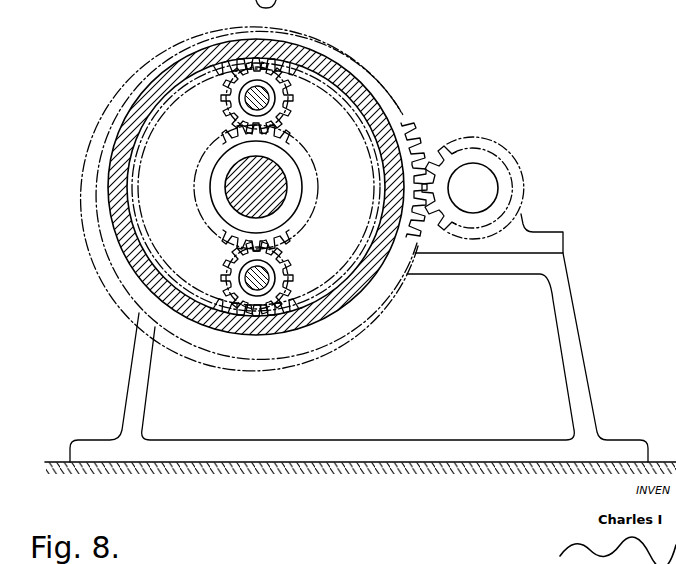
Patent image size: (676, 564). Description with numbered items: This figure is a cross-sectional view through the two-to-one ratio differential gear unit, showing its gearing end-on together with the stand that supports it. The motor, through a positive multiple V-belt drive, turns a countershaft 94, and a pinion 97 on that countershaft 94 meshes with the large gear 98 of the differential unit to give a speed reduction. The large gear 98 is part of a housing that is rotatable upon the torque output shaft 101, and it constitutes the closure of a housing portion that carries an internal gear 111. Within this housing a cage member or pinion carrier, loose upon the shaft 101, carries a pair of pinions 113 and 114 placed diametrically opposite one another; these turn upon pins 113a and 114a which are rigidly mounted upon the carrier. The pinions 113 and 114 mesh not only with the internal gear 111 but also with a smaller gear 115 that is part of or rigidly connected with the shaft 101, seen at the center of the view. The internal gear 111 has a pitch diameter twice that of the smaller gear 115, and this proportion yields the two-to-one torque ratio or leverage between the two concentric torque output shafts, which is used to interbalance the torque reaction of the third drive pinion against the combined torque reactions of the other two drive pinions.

The countershaft 94 is at (490, 184).
The pinion 97 is at (442, 142).
The gear 98 is at (414, 121).
The torque output shaft 101 is at (278, 189).
The internal gear 111 is at (284, 116).
The pinion 113 is at (282, 265).
The pin 113a is at (243, 278).
The pinion 114 is at (287, 119).
The pin 114a is at (247, 99).
The smaller gear 115 is at (232, 128).